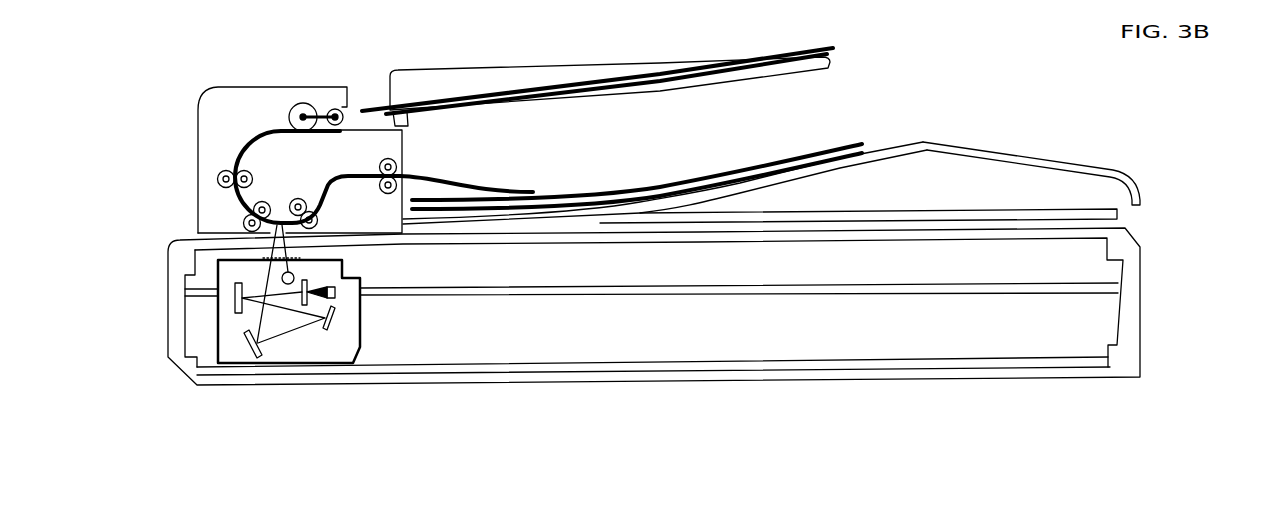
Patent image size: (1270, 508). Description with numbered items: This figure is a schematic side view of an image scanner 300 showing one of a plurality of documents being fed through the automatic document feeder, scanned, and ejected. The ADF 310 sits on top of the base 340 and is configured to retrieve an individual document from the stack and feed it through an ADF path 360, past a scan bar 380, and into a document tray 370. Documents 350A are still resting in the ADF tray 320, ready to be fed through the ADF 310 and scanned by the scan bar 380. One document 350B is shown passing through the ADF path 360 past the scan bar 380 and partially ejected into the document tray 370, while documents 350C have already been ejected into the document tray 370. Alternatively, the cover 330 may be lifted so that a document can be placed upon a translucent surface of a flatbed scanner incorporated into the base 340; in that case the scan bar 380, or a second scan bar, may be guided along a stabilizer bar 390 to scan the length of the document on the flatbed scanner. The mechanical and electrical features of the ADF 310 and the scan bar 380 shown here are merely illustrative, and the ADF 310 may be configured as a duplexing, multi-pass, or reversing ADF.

The image scanner 300 is at (179, 61).
The ADF 310 is at (197, 118).
The ADF tray 320 is at (619, 99).
The cover 330 is at (1143, 192).
The base 340 is at (1142, 313).
The documents 350A is at (842, 40).
The document 350B is at (537, 192).
The documents 350C is at (875, 142).
The ADF path 360 is at (252, 143).
The document tray 370 is at (749, 129).
The scan bar 380 is at (362, 328).
The stabilizer bar 390 is at (527, 300).